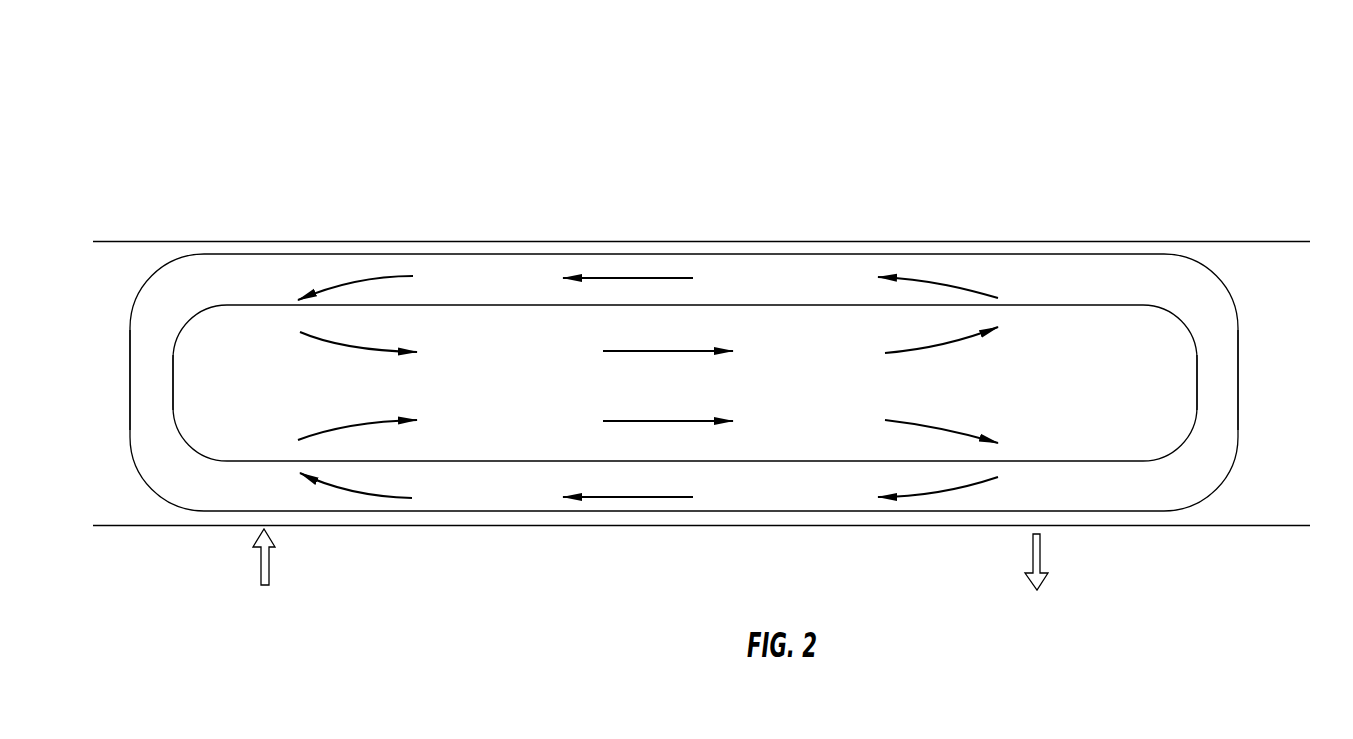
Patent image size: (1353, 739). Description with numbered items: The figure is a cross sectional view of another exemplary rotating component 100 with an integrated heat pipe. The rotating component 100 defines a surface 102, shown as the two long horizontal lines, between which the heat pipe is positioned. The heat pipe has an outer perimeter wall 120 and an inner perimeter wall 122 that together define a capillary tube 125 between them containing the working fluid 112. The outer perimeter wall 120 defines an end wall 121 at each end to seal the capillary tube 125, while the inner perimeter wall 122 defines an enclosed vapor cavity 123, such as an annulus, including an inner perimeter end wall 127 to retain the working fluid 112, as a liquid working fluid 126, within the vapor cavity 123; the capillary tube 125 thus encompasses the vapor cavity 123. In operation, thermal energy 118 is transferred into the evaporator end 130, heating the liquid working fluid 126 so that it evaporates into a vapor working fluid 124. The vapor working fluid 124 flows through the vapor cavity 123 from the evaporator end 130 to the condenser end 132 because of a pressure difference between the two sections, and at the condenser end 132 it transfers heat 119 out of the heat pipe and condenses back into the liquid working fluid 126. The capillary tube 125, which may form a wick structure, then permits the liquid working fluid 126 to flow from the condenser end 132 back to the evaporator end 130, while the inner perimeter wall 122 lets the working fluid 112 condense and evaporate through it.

The rotating component 100 is at (385, 142).
The surface 102 is at (552, 241).
The working fluid 112 is at (362, 340).
The thermal energy 118 is at (258, 553).
The heat 119 is at (1033, 553).
The outer perimeter wall 120 is at (1068, 254).
The end wall 121 is at (130, 387).
The inner perimeter wall 122 is at (1068, 305).
The vapor cavity 123 is at (668, 401).
The vapor working fluid 124 is at (343, 347).
The capillary tube 125 is at (777, 293).
The liquid working fluid 126 is at (925, 277).
The inner perimeter end wall 127 is at (173, 402).
The evaporator end 130 is at (222, 220).
The condenser end 132 is at (992, 215).